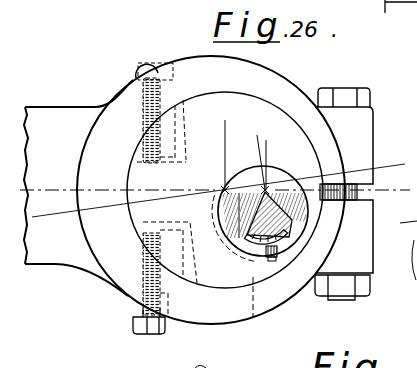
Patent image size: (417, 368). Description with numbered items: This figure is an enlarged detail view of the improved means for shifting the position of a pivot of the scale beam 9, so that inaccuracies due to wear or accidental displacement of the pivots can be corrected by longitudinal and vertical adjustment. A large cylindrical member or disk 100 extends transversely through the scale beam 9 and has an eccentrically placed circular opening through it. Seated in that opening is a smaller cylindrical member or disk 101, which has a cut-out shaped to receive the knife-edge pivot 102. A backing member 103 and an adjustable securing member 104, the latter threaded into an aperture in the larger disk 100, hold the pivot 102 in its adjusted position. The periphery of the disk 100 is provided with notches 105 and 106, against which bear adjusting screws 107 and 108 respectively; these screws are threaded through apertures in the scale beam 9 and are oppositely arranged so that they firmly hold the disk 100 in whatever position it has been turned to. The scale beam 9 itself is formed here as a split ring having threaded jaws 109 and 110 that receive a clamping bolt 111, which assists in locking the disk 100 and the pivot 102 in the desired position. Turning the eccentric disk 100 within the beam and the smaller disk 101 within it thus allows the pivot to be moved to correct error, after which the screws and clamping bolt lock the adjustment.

The scale beam 9 is at (47, 261).
The large cylindrical member or disk 100 is at (253, 110).
The smaller cylindrical member or disk 101 is at (237, 247).
The knife-edge pivot 102 is at (285, 241).
The backing member 103 is at (265, 247).
The adjustable securing member 104 is at (271, 262).
The notch 105 is at (132, 157).
The notch 106 is at (143, 234).
The adjusting screw 107 is at (140, 66).
The adjusting screw 108 is at (140, 331).
The threaded jaw 109 is at (363, 123).
The threaded jaw 110 is at (356, 259).
The clamping bolt 111 is at (352, 90).